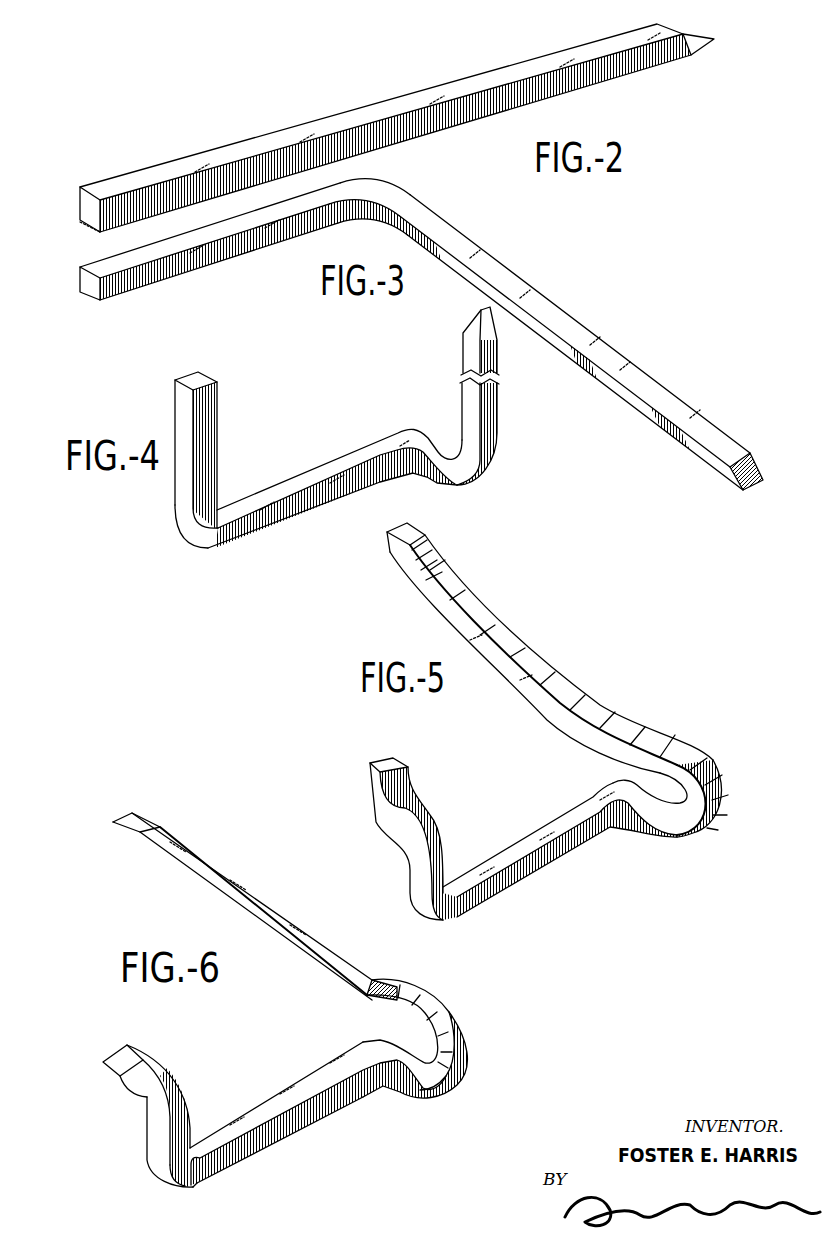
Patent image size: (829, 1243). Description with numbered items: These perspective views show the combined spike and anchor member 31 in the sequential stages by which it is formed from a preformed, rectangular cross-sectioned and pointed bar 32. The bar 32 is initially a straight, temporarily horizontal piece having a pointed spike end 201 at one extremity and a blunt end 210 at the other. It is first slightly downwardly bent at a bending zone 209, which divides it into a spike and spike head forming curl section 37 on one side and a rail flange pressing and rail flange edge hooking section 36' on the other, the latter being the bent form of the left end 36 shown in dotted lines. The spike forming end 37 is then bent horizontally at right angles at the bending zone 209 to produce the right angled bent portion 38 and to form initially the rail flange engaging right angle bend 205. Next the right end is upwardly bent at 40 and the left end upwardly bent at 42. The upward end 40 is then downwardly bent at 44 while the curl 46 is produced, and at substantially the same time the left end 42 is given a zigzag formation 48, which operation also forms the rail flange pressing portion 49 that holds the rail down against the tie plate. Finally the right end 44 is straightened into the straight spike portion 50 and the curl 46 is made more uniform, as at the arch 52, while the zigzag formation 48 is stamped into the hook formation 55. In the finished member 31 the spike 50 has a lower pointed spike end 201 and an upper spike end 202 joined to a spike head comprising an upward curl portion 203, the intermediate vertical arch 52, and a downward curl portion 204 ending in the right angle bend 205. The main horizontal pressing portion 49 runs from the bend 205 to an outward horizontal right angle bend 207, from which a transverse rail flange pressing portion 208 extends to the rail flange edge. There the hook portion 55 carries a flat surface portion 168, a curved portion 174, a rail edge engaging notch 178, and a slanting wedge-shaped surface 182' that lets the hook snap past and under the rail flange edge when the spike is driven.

In FIG. 6, the combined spike and anchor member 31 is at (365, 1124).
In FIG. 2, the bar 32 is at (330, 109).
In FIG. 2, the left end of bar 36 is at (383, 128).
In FIG. 3, the left end of bar 36 is at (421, 329).
In FIG. 2, the bent left end 36' is at (99, 245).
In FIG. 2, the spike forming end 37 is at (576, 53).
In FIG. 3, the right angled bent portion 38 is at (588, 342).
In FIG. 4, the upward bend of right end 40 is at (490, 413).
In FIG. 4, the upward bend of left end 42 is at (207, 437).
In FIG. 5, the downward bend of right end 44 is at (473, 612).
In FIG. 5, the curl 46 is at (720, 770).
In FIG. 5, the zigzag formation 48 is at (390, 835).
In FIG. 4, the rail flange pressing portion 49 is at (345, 460).
In FIG. 5, the rail flange pressing portion 49 is at (530, 850).
In FIG. 6, the rail flange pressing portion 49 is at (300, 1100).
In FIG. 6, the straight spike portion 50 is at (226, 886).
In FIG. 6, the arch 52 is at (465, 1047).
In FIG. 6, the hook portion 55 is at (130, 1087).
In FIG. 6, the flat surface portion 168 is at (125, 1060).
In FIG. 6, the curved portion 174 is at (165, 1075).
In FIG. 6, the rail edge engaging notch 178 is at (137, 1113).
In FIG. 6, the wedge-shaped surface 182' is at (80, 1085).
In FIG. 2, the pointed spike end 201 is at (701, 45).
In FIG. 6, the upper spike end 202 is at (372, 980).
In FIG. 6, the upward curl portion 203 is at (388, 1013).
In FIG. 6, the downward curl portion 204 is at (397, 1078).
In FIG. 3, the right angle bend 205 is at (390, 184).
In FIG. 6, the right angle bend 205 is at (355, 1038).
In FIG. 4, the outward horizontal right angle bend 207 is at (212, 535).
In FIG. 6, the outward horizontal right angle bend 207 is at (187, 1168).
In FIG. 6, the transverse rail flange pressing portion 208 is at (183, 1110).
In FIG. 2, the bending zone 209 is at (347, 157).
In FIG. 2, the blunt end 210 is at (88, 210).